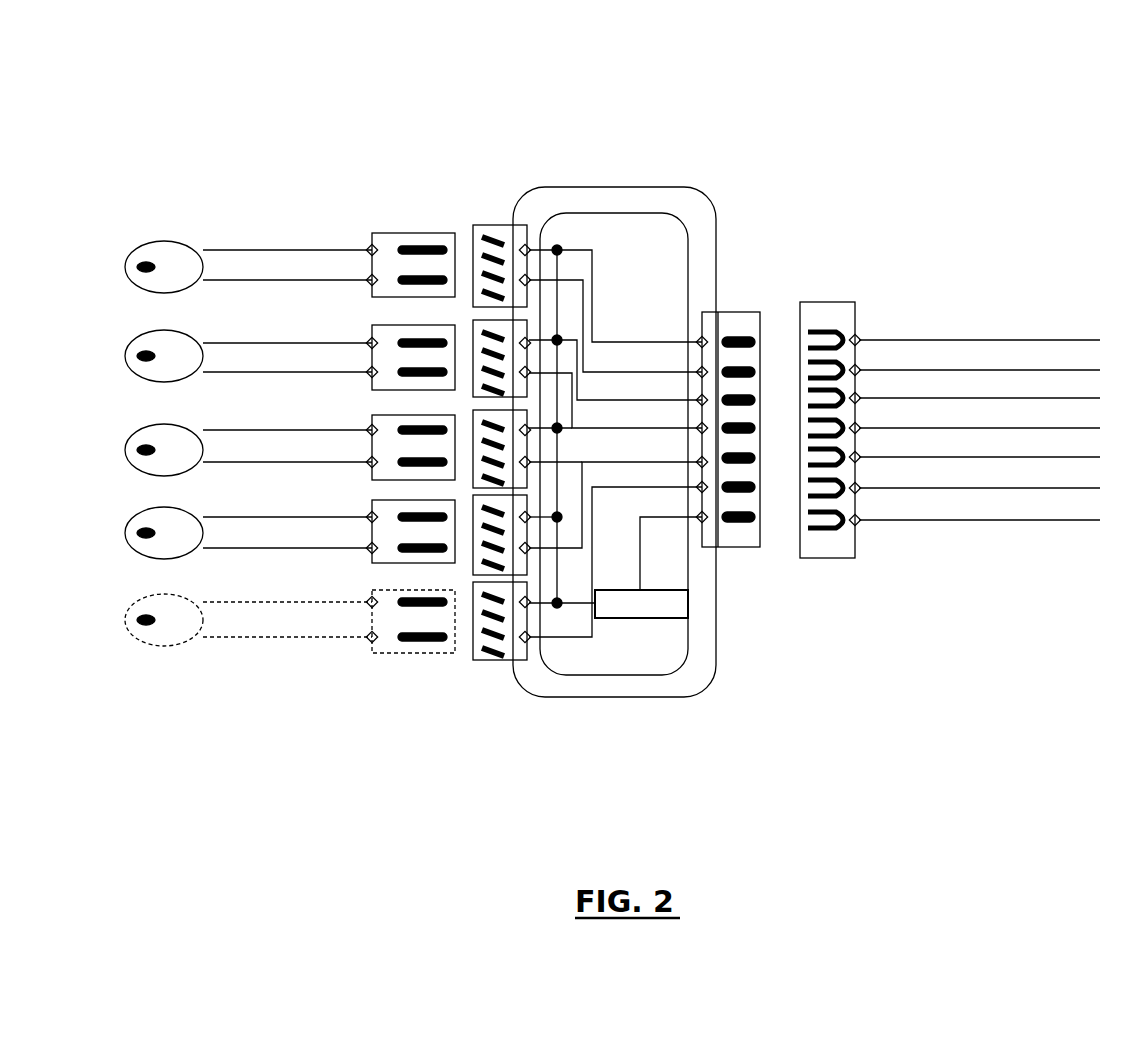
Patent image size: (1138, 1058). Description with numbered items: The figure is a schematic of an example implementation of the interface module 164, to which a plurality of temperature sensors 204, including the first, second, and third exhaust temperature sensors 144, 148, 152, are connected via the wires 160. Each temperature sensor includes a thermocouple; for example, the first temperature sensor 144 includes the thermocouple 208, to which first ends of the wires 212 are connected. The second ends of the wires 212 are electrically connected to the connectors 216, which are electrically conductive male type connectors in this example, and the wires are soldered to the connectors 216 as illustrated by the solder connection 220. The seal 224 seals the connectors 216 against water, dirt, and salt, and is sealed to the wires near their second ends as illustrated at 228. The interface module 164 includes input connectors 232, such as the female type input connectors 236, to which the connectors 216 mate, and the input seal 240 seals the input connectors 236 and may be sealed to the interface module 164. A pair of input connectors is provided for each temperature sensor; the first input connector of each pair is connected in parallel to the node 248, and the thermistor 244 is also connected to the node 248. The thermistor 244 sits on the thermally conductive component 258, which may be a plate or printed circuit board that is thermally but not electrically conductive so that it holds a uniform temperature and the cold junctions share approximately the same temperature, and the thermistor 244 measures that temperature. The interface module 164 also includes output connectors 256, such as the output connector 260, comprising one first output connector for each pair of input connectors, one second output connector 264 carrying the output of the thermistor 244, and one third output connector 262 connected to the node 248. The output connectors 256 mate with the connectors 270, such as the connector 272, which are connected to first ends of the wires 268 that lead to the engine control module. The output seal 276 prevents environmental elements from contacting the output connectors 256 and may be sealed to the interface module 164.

The first exhaust temperature sensor 144 is at (128, 262).
The second exhaust temperature sensor 148 is at (128, 348).
The third exhaust temperature sensor 152 is at (126, 445).
The wires 160 is at (293, 226).
The interface module 164 is at (655, 187).
The temperature sensors 204 is at (175, 150).
The thermocouple 208 is at (148, 262).
The wires 212 is at (205, 250).
The connectors 216 is at (395, 233).
The solder connection 220 is at (378, 238).
The seal 224 is at (447, 232).
The seal to wires 228 is at (372, 248).
The input connectors 232 is at (498, 158).
The input connectors 236 is at (490, 224).
The input seal 240 is at (510, 224).
The thermistor 244 is at (663, 620).
The node 248 is at (560, 248).
The output connectors 256 is at (735, 283).
The thermally conductive component 258 is at (620, 212).
The output connector 260 is at (738, 338).
The third output connector 262 is at (757, 328).
The second output connector 264 is at (745, 535).
The wires 268 is at (1000, 283).
The connectors 270 is at (827, 283).
The connector 272 is at (828, 332).
The output seal 276 is at (718, 548).